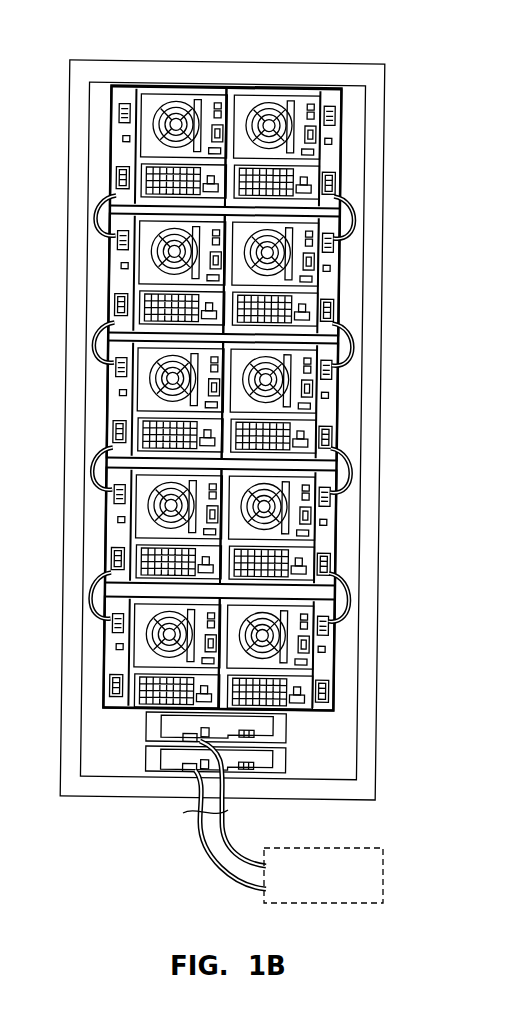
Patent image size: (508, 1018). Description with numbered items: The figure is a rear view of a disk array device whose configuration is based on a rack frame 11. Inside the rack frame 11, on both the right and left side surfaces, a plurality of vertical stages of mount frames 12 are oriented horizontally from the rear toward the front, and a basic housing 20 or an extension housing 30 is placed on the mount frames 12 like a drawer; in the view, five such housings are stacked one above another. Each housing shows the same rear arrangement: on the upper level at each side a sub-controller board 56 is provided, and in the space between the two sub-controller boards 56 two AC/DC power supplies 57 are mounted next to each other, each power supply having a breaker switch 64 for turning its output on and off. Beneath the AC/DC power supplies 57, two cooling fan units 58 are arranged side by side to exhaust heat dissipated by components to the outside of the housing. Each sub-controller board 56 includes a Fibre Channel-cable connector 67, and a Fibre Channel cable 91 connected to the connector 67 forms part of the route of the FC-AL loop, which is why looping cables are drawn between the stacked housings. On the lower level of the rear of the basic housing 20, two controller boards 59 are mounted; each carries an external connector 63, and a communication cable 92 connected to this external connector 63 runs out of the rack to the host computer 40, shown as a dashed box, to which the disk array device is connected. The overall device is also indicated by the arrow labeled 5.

The storage system 5 is at (99, 821).
The rack frame 11 is at (258, 62).
The mount frame 12 is at (108, 211).
The basic housing 20 is at (360, 739).
The extension housing 30 is at (345, 110).
The sub-controller board 56 is at (114, 106).
The AC/DC power supply 57 is at (118, 138).
The cooling fan unit 58 is at (112, 172).
The controller board 59 is at (150, 722).
The external connector 63 is at (185, 741).
The breaker switch 64 is at (128, 128).
The Fibre Channel-cable connector 67 is at (124, 160).
The Fibre Channel cable 91 is at (97, 212).
The communication cable 92 is at (232, 845).
The host computer 40 is at (340, 848).